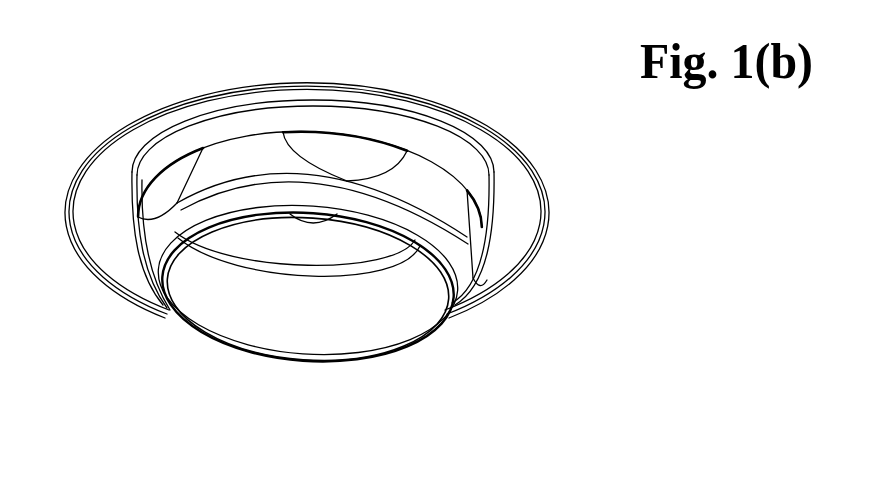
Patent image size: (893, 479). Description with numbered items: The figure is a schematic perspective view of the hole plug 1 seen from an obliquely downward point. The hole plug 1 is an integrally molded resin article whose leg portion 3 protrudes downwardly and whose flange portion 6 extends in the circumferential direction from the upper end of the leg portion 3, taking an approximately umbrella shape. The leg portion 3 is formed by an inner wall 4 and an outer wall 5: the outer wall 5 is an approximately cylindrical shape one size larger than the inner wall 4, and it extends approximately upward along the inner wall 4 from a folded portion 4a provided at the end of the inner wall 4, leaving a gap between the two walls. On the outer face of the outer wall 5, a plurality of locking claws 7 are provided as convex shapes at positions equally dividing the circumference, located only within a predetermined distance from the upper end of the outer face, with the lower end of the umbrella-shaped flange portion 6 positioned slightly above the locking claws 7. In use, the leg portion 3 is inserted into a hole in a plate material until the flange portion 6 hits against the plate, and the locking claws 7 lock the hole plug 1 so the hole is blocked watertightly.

The hole plug 1 is at (330, 242).
The leg portion 3 is at (128, 271).
The inner wall 4 is at (283, 335).
The folded portion 4a is at (397, 353).
The outer wall 5 is at (478, 290).
The flange portion 6 is at (514, 152).
The locking claw 7 is at (158, 190).